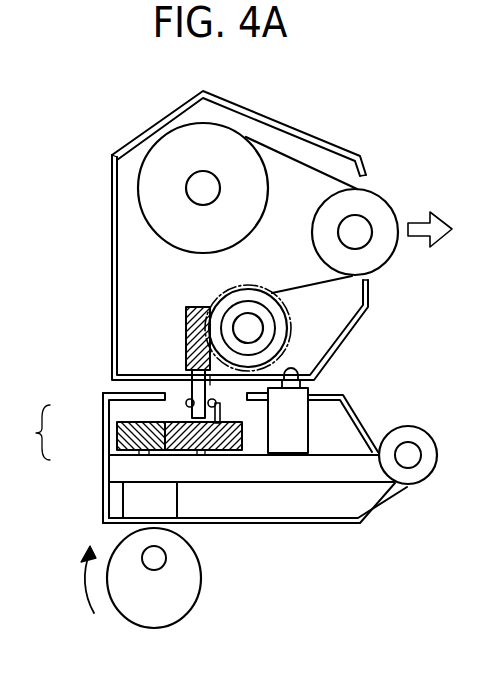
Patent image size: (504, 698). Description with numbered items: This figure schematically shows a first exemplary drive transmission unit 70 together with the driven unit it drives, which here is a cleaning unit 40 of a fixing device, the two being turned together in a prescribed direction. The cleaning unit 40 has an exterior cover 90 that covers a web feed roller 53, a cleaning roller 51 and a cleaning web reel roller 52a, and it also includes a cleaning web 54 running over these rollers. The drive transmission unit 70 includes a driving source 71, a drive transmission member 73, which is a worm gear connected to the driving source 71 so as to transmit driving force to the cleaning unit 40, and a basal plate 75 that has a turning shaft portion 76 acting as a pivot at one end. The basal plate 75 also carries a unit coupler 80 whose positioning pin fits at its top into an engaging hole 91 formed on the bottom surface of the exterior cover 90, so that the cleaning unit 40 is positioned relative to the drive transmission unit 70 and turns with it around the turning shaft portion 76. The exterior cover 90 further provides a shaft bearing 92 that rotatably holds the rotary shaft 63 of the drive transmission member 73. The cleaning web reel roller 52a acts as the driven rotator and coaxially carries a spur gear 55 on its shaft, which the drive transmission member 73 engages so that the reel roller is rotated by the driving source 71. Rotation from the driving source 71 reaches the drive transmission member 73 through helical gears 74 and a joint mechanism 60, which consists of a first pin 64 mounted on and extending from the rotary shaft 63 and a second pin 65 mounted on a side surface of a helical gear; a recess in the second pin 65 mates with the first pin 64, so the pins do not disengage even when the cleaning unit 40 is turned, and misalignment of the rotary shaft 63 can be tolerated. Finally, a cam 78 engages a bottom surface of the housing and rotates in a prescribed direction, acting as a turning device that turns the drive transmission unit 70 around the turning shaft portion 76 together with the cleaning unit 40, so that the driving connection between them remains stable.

The cleaning unit 40 is at (118, 140).
The exterior cover 90 is at (244, 105).
The cleaning web 54 is at (303, 162).
The web feed roller 53 is at (152, 201).
The cleaning roller 51 is at (382, 252).
The spur gear 55 is at (229, 296).
The cleaning web reel roller 52a is at (258, 325).
The drive transmission member 73 is at (186, 332).
The rotary shaft 63 is at (192, 386).
The first pin 64 is at (186, 404).
The second pin 65 is at (232, 432).
The joint mechanism 60 is at (28, 432).
The shaft bearing 92 is at (270, 400).
The engaging hole 91 is at (302, 370).
The drive transmission unit 70 is at (372, 401).
The helical gears 74 is at (103, 472).
The driving source 71 is at (168, 502).
The basal plate 75 is at (266, 470).
The unit coupler 80 is at (290, 443).
The turning shaft portion 76 is at (413, 478).
The cam 78 is at (190, 588).